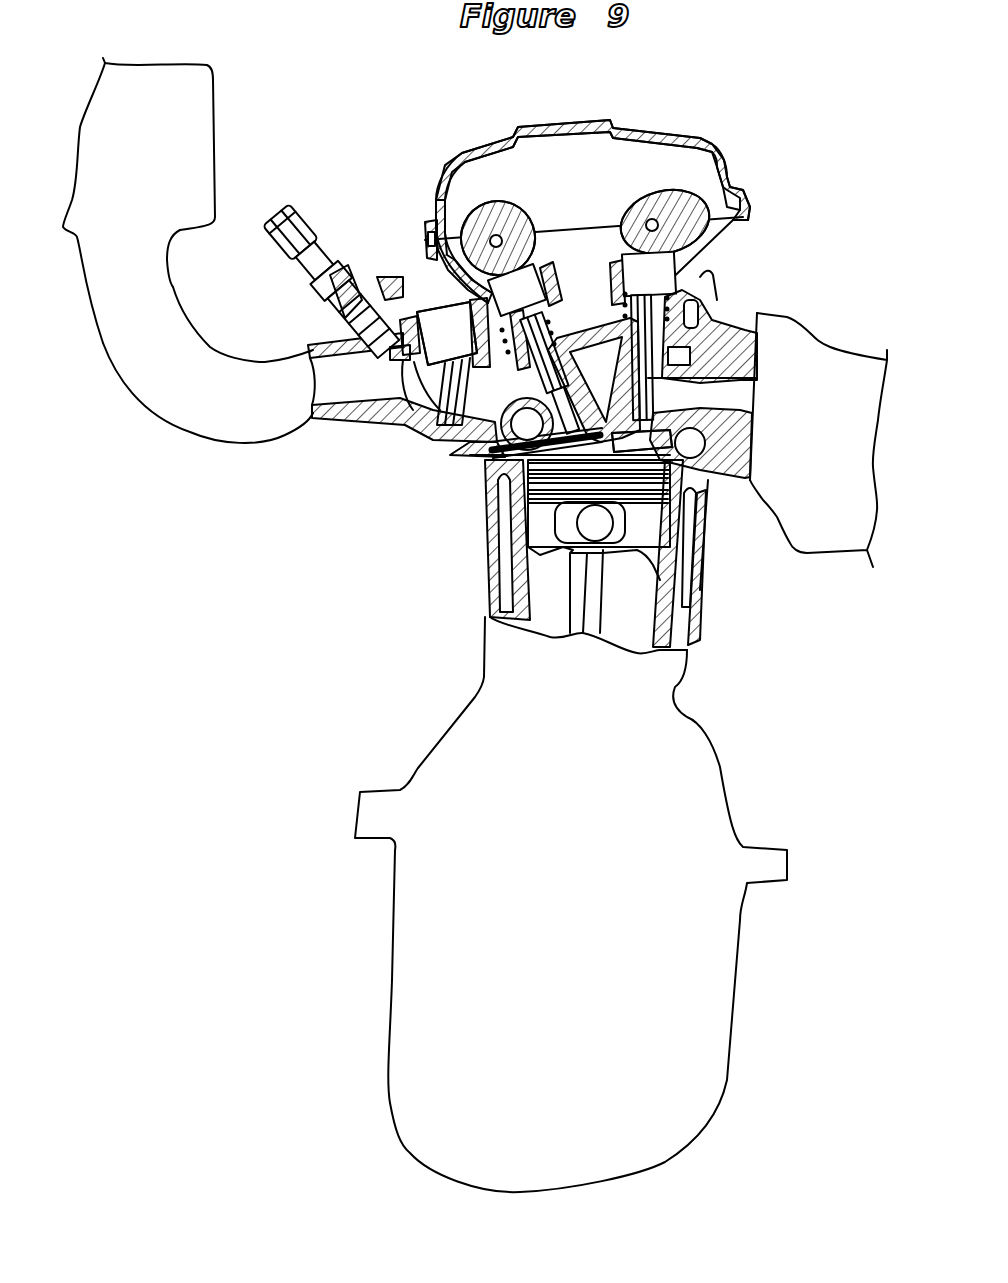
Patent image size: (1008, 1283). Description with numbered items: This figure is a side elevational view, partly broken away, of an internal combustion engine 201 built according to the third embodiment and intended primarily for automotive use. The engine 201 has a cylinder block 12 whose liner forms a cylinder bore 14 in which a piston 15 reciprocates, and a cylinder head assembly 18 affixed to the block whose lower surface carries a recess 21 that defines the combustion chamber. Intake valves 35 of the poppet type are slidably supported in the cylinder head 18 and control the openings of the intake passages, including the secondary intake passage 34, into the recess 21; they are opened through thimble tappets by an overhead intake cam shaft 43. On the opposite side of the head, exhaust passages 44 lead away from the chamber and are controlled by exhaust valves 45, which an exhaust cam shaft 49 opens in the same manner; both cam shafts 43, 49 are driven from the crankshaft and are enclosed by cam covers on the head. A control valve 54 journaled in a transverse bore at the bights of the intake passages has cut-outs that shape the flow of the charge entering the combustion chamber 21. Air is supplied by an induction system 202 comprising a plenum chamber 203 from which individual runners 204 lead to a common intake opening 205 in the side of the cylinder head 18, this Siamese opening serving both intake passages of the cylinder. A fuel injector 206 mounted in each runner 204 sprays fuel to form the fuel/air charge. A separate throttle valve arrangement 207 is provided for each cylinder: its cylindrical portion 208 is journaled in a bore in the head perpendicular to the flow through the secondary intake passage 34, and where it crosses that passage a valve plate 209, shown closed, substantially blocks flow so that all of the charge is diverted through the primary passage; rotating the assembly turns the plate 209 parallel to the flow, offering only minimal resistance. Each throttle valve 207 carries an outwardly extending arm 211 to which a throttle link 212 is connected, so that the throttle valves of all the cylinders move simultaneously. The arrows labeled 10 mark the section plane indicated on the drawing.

The engine 201 is at (797, 192).
The induction system 202 is at (255, 192).
The plenum chamber 203 is at (217, 130).
The runner 204 is at (213, 337).
The intake opening 205 is at (403, 427).
The fuel injector 206 is at (345, 222).
The throttle valve arrangement 207 is at (447, 320).
The cylindrical portion 208 is at (440, 200).
The valve plate 209 is at (433, 413).
The section line 10 is at (365, 207).
The arm 211 is at (422, 297).
The throttle link 212 is at (388, 287).
The intake cam shaft 43 is at (523, 200).
The exhaust cam shaft 49 is at (667, 197).
The cylinder head assembly 18 is at (728, 321).
The exhaust passage 44 is at (737, 413).
The exhaust valve 45 is at (648, 410).
The intake valve 35 is at (570, 386).
The secondary intake passage 34 is at (480, 433).
The control valve 54 is at (483, 460).
The cylinder block 12 is at (480, 557).
The piston 15 is at (677, 520).
The cylinder bore 14 is at (670, 607).
The recess 21 is at (648, 517).